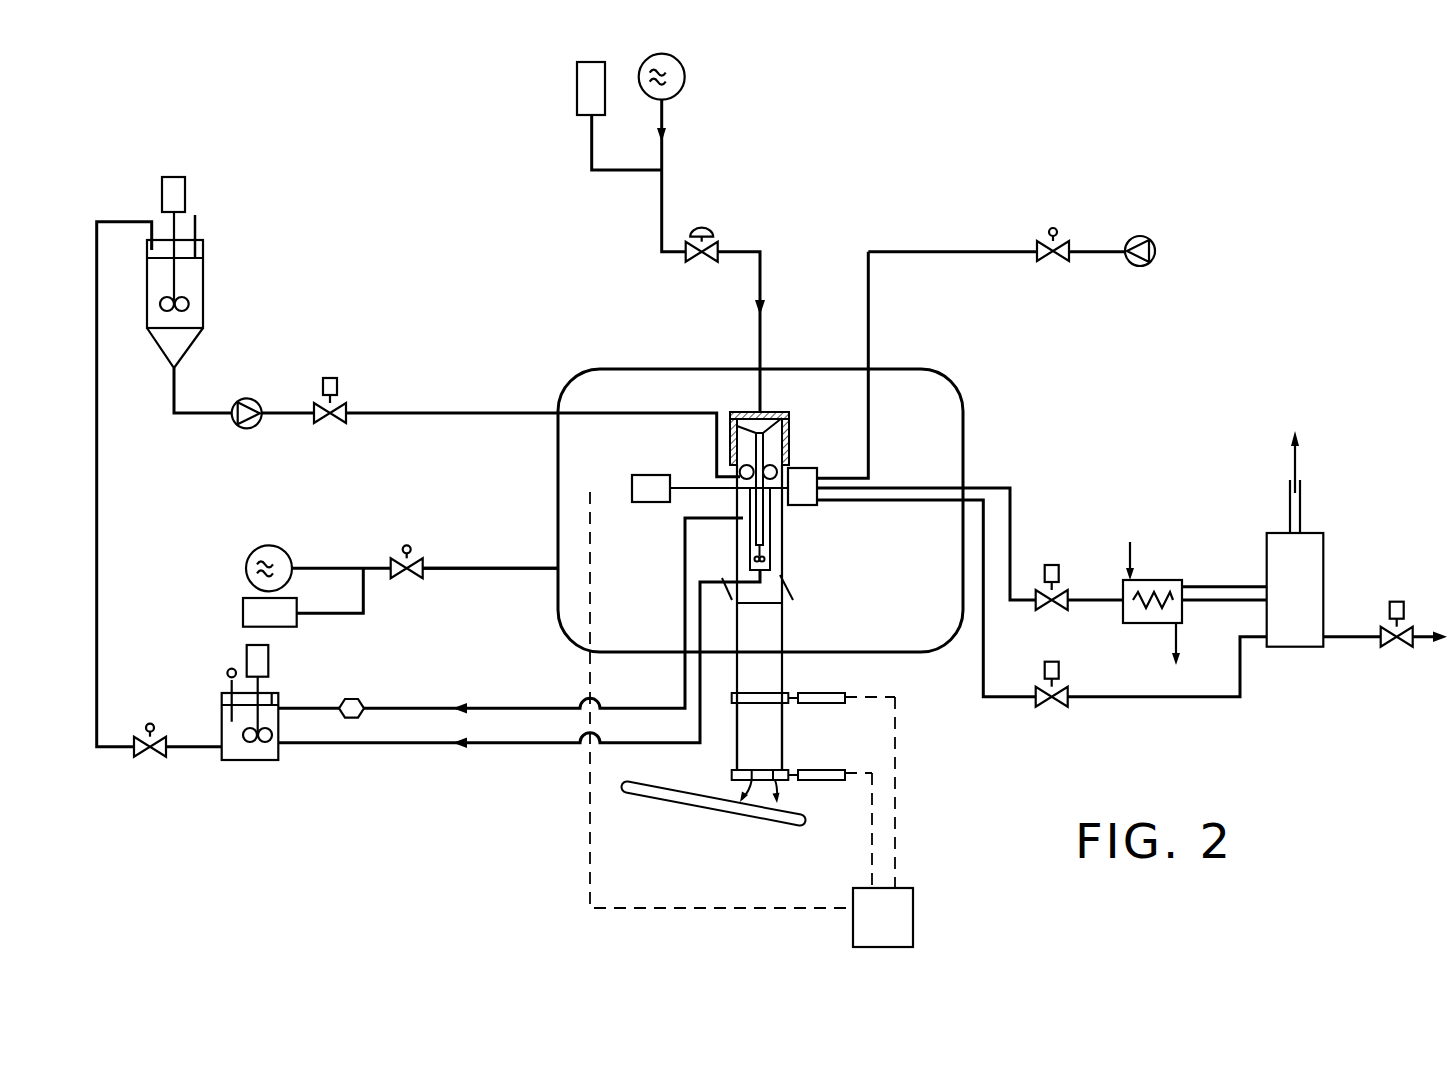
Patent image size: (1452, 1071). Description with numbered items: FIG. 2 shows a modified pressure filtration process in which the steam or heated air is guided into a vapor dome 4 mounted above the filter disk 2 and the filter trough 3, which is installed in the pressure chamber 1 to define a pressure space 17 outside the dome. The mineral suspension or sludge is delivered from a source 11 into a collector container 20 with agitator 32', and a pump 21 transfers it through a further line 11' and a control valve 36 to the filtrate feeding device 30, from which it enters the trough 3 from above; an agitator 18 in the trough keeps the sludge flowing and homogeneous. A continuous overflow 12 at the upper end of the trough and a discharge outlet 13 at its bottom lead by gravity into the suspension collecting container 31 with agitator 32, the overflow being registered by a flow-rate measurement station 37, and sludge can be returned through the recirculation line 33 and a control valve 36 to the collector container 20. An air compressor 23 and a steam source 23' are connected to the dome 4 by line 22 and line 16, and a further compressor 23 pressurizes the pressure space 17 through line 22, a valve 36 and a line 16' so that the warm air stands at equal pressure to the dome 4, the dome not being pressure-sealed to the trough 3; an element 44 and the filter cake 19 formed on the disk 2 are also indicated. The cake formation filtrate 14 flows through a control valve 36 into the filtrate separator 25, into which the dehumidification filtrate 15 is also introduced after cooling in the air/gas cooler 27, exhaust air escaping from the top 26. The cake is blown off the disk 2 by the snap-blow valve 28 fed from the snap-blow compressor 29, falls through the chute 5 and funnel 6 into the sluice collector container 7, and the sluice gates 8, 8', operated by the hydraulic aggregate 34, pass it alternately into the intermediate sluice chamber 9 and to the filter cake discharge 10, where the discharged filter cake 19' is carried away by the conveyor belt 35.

The pressure chamber 1 is at (621, 338).
The filter disk 2 is at (762, 412).
The filter trough 3 is at (773, 522).
The vapor dome 4 is at (789, 437).
The chute 5 is at (778, 560).
The funnel 6 is at (732, 600).
The sluice collector container 7 is at (770, 665).
The sluice gate 8 is at (775, 716).
The sluice gate 8' is at (766, 770).
The intermediate sluice chamber 9 is at (767, 730).
The filter cake discharge 10 is at (780, 817).
The source 11 is at (233, 217).
The feed line 11' is at (457, 405).
The continuous overflow 12 is at (522, 708).
The discharge outlet 13 is at (487, 743).
The cake formation filtrate 14 is at (983, 637).
The dehumidification filtrate 15 is at (1010, 527).
The line 16 is at (490, 527).
The gas supply line 16' is at (784, 318).
The pressure space 17 is at (938, 407).
The agitator 18 is at (790, 582).
The filter cake 19 is at (761, 395).
The discharged filter cake 19' is at (726, 836).
The collector container 20 is at (192, 278).
The pump 21 is at (252, 398).
The line 22 is at (665, 120).
The air compressor 23 is at (471, 323).
The steam source 23' is at (407, 344).
The filtrate separator 25 is at (1325, 557).
The top 26 is at (1303, 487).
The air/gas cooler 27 is at (1168, 580).
The snap-blow valve 28 is at (1035, 242).
The snap-blow compressor 29 is at (1157, 248).
The filtrate feeding device 30 is at (735, 481).
The suspension collecting container 31 is at (245, 750).
The agitator 32 is at (290, 688).
The agitator 32' is at (141, 227).
The recirculation line 33 is at (98, 647).
The hydraulic aggregate 34 is at (913, 905).
The conveyor belt 35 is at (658, 800).
The control valve 36 is at (705, 232).
The flow-rate measurement station 37 is at (355, 698).
The sensor unit 44 is at (640, 475).